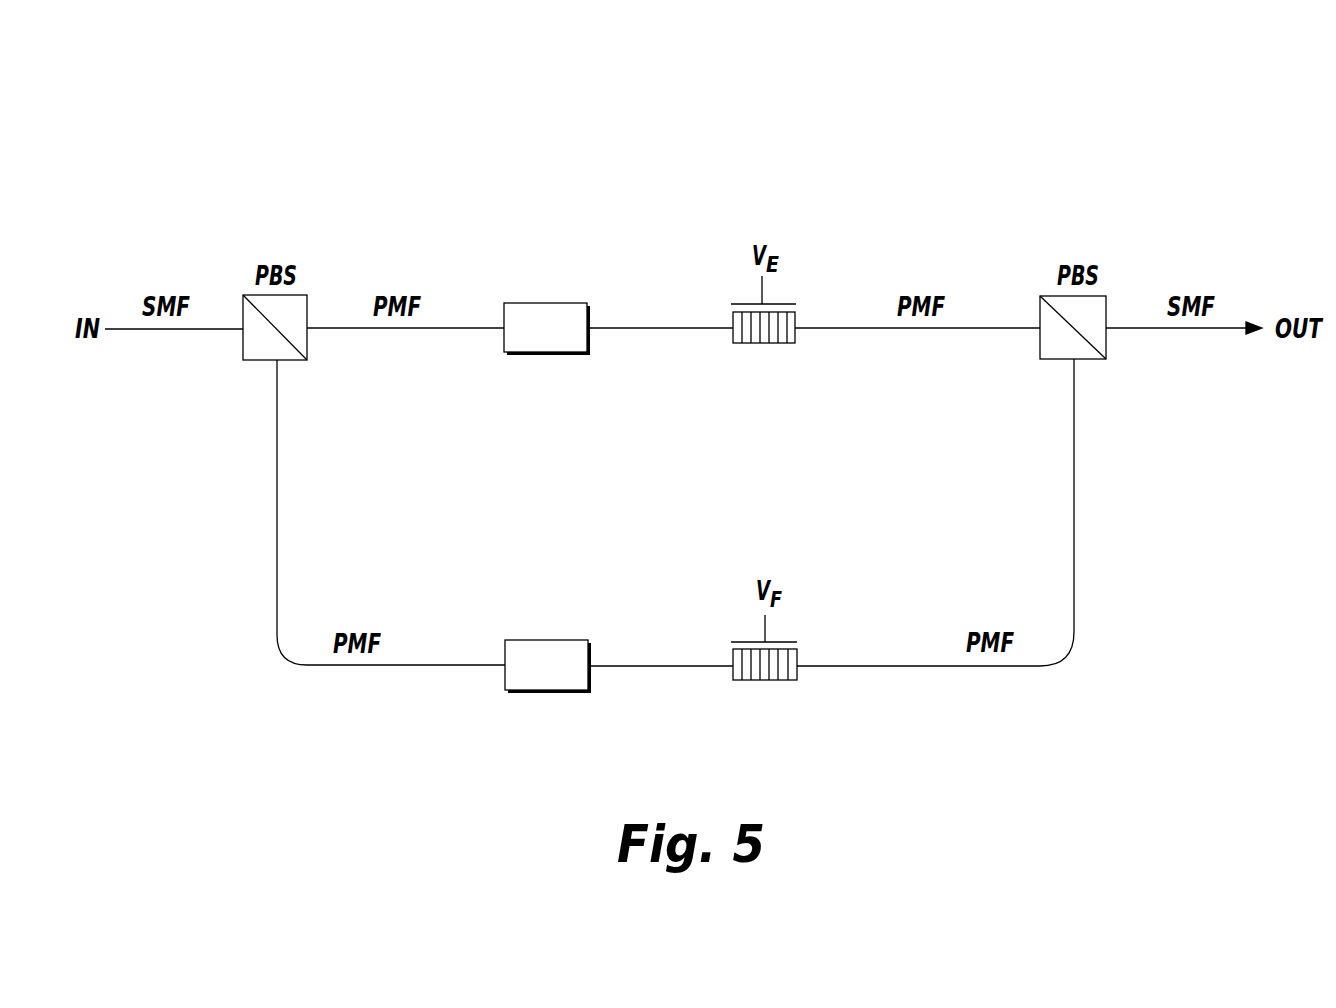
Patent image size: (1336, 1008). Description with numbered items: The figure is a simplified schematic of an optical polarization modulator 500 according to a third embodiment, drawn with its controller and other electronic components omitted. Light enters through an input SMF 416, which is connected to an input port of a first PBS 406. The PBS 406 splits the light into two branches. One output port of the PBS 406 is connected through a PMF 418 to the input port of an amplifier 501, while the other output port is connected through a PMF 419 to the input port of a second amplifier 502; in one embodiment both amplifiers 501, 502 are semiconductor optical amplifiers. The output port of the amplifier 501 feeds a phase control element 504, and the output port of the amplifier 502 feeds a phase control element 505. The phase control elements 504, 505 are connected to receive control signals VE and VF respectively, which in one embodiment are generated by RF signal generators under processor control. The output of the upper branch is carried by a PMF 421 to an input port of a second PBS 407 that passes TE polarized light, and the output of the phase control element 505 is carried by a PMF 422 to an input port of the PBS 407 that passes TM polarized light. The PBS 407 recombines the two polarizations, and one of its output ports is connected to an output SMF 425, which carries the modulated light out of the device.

The optical polarization modulator 500 is at (1188, 142).
The input SMF 416 is at (167, 330).
The PBS 406 is at (296, 360).
The PMF 418 is at (388, 330).
The amplifier 501 is at (560, 352).
The phase control element 504 is at (773, 343).
The PMF 421 is at (977, 330).
The PBS 407 is at (1093, 360).
The output SMF 425 is at (1213, 330).
The PMF 419 is at (277, 477).
The amplifier 502 is at (557, 690).
The phase control element 505 is at (776, 680).
The PMF 422 is at (1020, 666).